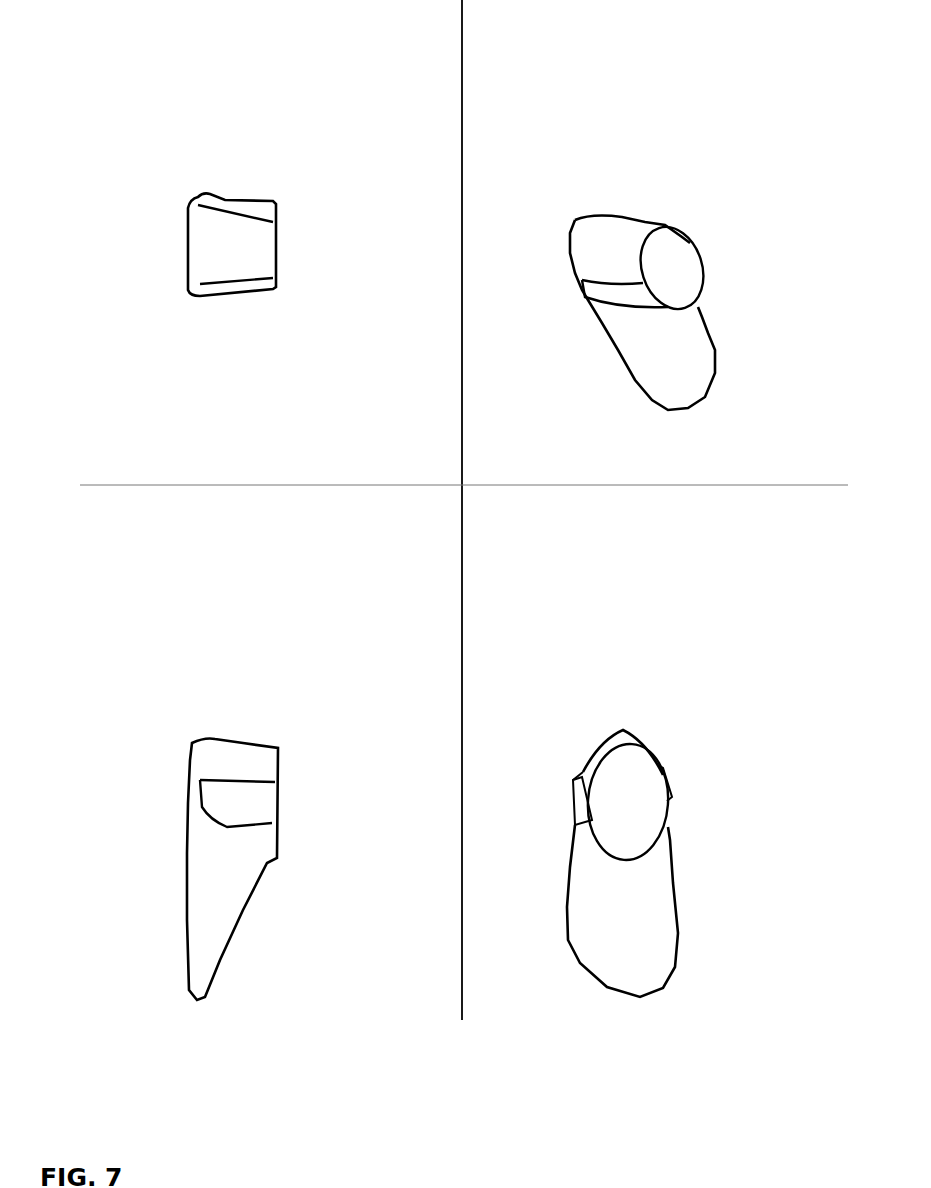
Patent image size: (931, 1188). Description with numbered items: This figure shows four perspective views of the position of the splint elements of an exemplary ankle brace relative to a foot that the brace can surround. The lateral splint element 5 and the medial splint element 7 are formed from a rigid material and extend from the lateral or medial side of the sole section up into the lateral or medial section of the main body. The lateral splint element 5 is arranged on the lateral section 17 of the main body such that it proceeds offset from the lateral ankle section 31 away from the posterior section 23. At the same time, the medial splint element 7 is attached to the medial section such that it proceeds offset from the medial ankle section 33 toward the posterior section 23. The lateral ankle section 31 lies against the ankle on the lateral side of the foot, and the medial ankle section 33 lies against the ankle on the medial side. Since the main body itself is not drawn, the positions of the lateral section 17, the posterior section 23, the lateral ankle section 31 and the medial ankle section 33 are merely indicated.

The lateral splint element 5 is at (265, 290).
The medial splint element 7 is at (254, 207).
The lateral section 17 is at (220, 850).
The posterior section 23 is at (228, 248).
The lateral ankle section 31 is at (613, 277).
The medial ankle section 33 is at (687, 242).